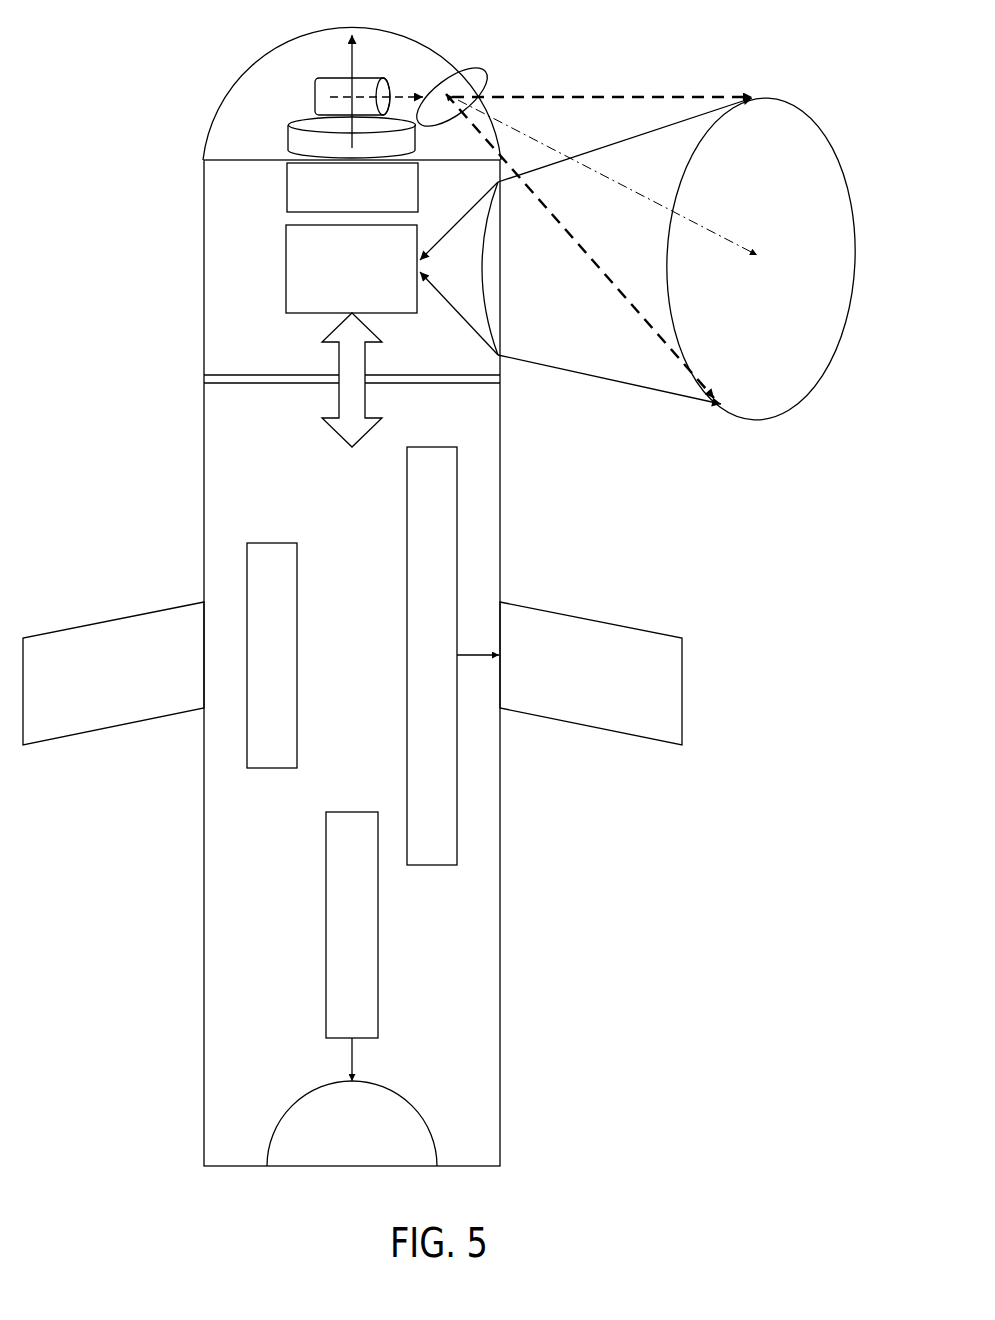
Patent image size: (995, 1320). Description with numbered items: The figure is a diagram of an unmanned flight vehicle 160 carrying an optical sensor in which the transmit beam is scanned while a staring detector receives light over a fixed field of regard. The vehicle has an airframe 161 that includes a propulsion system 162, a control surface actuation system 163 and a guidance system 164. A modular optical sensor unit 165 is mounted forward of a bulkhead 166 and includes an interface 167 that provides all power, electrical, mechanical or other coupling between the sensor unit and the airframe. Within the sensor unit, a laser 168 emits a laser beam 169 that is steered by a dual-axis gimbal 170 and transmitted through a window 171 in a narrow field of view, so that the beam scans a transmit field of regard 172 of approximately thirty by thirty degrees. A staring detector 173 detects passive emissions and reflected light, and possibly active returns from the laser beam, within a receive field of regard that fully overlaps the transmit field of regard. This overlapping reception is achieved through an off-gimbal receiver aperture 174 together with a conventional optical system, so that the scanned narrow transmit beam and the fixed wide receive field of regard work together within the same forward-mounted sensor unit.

The unmanned flight vehicle 160 is at (95, 340).
The airframe 161 is at (203, 808).
The propulsion system 162 is at (326, 924).
The control surface actuation system 163 is at (407, 654).
The guidance system 164 is at (270, 543).
The modular optical sensor unit 165 is at (240, 50).
The bulkhead 166 is at (288, 375).
The interface 167 is at (335, 435).
The laser 168 is at (287, 183).
The laser beam 169 is at (760, 255).
The dual-axis gimbal 170 is at (315, 95).
The window 171 is at (440, 90).
The transmit FOR 172 is at (825, 133).
The staring detector 173 is at (286, 268).
The off-gimbal receiver aperture 174 is at (485, 265).